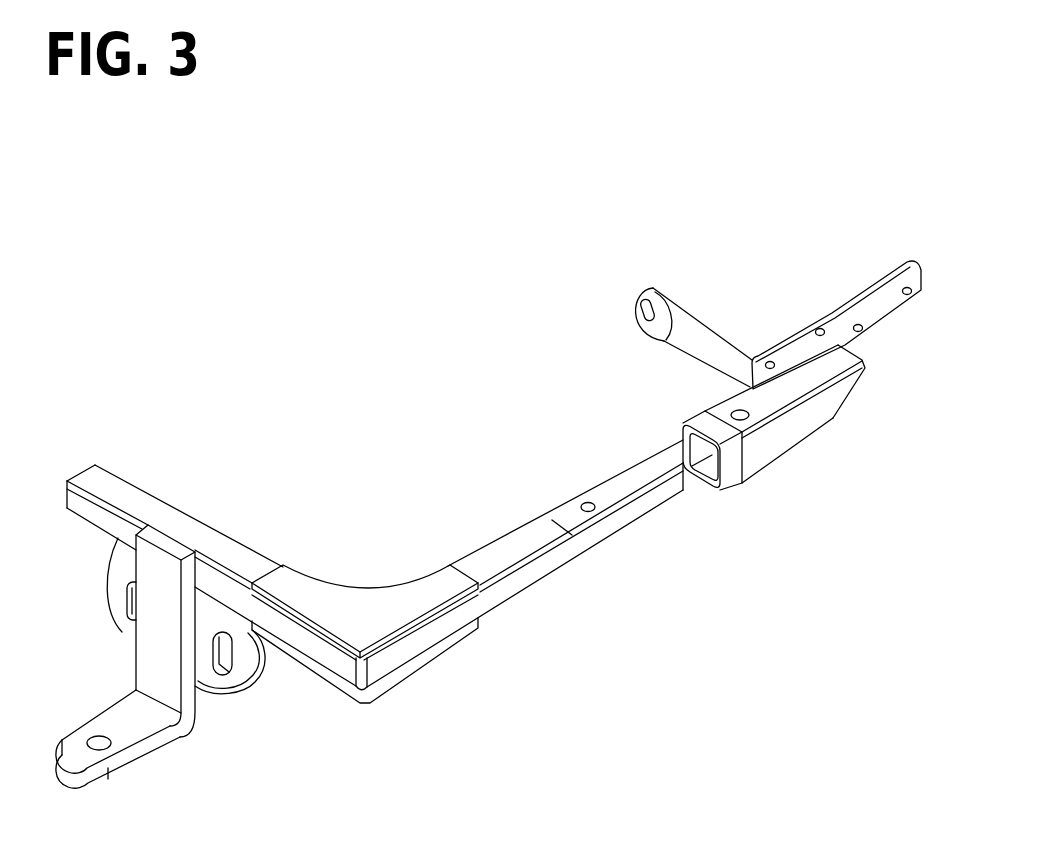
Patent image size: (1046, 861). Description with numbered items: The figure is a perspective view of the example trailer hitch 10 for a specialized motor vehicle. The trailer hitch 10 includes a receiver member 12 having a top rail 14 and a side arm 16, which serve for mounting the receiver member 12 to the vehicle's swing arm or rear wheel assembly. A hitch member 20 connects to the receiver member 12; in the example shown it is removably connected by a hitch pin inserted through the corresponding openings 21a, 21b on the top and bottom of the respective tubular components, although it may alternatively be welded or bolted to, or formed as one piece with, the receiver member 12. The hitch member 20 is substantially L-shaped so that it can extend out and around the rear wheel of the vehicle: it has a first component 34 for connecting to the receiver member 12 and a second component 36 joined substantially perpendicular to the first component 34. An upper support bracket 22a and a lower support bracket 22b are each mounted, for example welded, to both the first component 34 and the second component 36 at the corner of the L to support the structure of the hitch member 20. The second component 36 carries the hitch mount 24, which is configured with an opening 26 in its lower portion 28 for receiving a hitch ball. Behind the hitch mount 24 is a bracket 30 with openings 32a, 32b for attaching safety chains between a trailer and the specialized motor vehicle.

The trailer hitch 10 is at (303, 361).
The receiver member 12 is at (812, 453).
The top rail 14 is at (877, 283).
The side arm 16 is at (696, 318).
The hitch member 20 is at (594, 574).
The opening 21a is at (735, 406).
The opening 21b is at (586, 502).
The upper support bracket 22a is at (423, 575).
The lower support bracket 22b is at (410, 662).
The hitch mount 24 is at (133, 663).
The opening 26 is at (96, 737).
The lower portion 28 is at (145, 760).
The bracket 30 is at (217, 696).
The opening 32a is at (123, 588).
The opening 32b is at (228, 669).
The first component 34 is at (513, 537).
The second component 36 is at (93, 463).